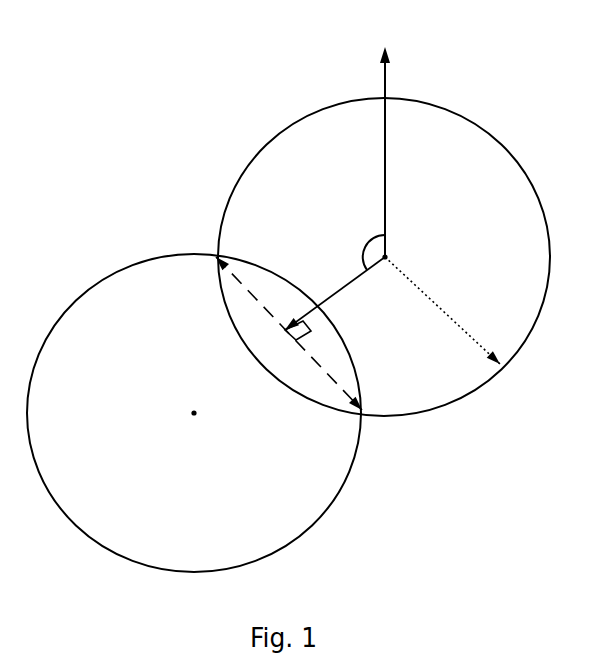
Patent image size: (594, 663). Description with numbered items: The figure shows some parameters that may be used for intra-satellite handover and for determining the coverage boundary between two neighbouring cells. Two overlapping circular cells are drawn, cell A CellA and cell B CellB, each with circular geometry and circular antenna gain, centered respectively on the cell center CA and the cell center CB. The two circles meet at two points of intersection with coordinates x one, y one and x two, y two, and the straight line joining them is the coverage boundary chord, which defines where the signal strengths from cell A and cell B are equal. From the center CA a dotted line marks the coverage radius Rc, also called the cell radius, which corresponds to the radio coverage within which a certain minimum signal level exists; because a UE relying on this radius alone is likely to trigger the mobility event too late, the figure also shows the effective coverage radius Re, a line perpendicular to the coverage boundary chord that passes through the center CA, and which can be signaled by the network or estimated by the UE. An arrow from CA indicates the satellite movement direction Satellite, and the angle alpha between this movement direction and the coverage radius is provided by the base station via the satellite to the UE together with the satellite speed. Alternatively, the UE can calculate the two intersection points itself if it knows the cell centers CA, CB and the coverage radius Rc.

The cell A CellA is at (384, 257).
The cell B CellB is at (194, 413).
The satellite movement direction Satellite is at (455, 148).
The cell center of cell A CA is at (403, 253).
The cell center of cell B CB is at (213, 410).
The angle α alpha is at (365, 247).
The effective coverage radius Re is at (335, 298).
The coverage radius Rc is at (442, 310).
The coverage boundary chord is at (291, 337).